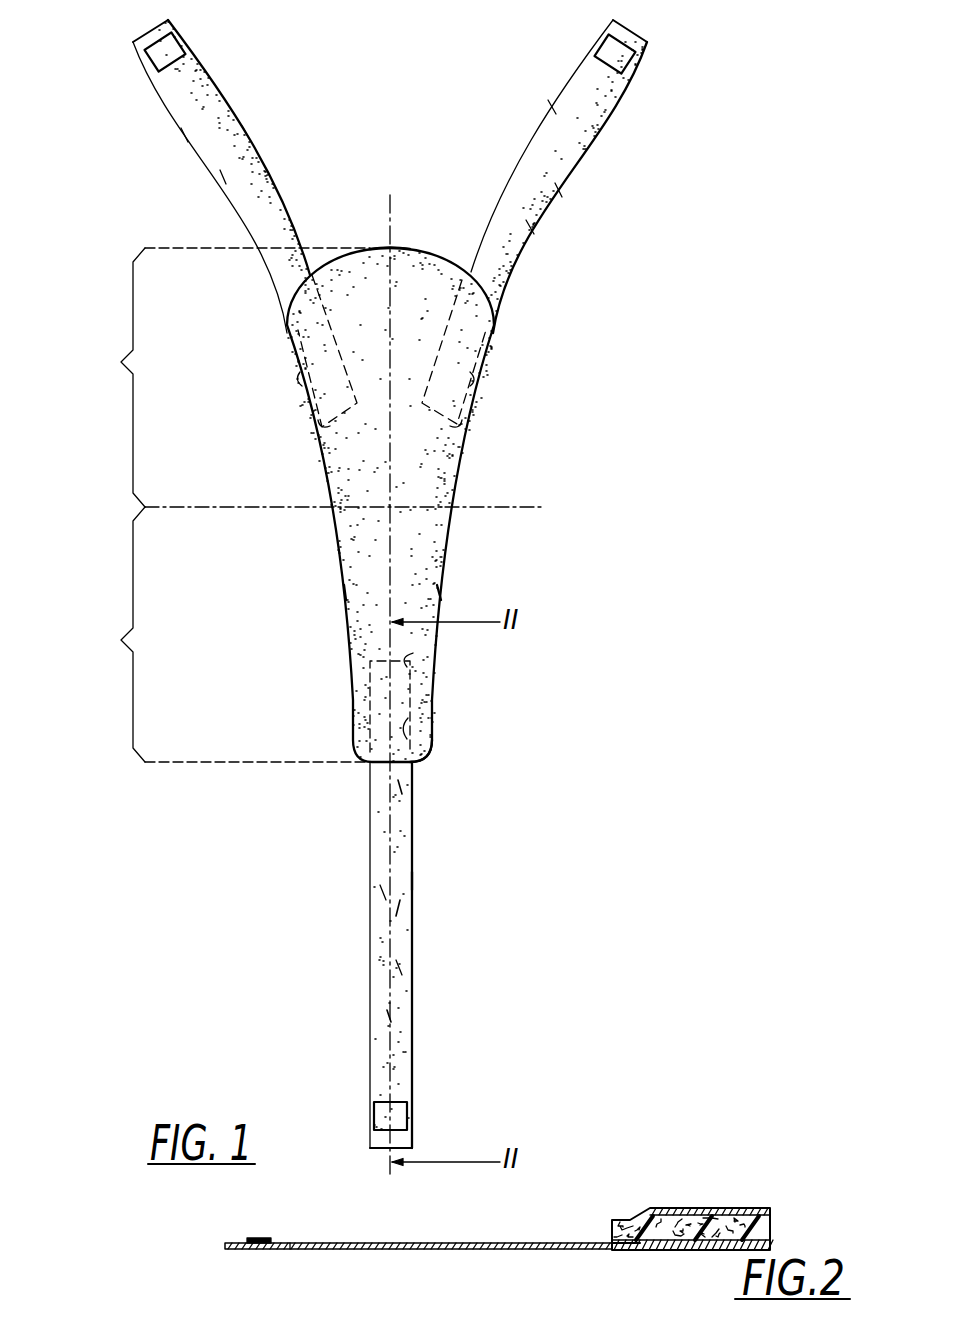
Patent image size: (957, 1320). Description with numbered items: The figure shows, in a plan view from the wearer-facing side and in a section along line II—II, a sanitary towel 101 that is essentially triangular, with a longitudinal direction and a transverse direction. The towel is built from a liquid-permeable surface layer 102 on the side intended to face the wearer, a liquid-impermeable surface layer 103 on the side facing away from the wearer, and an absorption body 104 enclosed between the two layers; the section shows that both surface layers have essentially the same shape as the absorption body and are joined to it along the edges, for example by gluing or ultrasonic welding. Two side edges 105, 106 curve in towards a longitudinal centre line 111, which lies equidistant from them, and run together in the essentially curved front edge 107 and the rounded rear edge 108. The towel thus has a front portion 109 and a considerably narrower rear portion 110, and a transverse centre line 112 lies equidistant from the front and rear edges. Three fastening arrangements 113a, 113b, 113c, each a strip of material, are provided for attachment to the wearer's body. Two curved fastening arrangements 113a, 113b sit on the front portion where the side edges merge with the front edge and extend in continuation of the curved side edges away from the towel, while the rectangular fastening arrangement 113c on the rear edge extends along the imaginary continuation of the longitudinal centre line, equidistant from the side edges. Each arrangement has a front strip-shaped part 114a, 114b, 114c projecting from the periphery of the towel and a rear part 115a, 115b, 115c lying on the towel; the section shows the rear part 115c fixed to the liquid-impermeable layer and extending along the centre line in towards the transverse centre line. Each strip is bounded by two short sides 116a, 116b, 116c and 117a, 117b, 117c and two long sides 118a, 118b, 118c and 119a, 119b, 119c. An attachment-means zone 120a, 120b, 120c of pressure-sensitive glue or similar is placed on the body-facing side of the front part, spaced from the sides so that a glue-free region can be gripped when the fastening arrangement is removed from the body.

In FIG. 1, the sanitary towel 101 is at (766, 34).
In FIG. 1, the liquid-permeable surface layer 102 is at (433, 472).
In FIG. 2, the liquid-permeable surface layer 102 is at (672, 1207).
In FIG. 1, the liquid-impermeable surface layer 103 is at (455, 478).
In FIG. 2, the liquid-impermeable surface layer 103 is at (732, 1247).
In FIG. 1, the absorption body 104 is at (445, 557).
In FIG. 2, the absorption body 104 is at (720, 1207).
In FIG. 1, the side edge 105 is at (444, 589).
In FIG. 1, the side edge 106 is at (340, 590).
In FIG. 1, the front edge 107 is at (401, 243).
In FIG. 1, the rear edge 108 is at (427, 773).
In FIG. 1, the front portion 109 is at (115, 367).
In FIG. 1, the rear portion 110 is at (115, 652).
In FIG. 1, the longitudinal centre line 111 is at (390, 229).
In FIG. 1, the transverse centre line 112 is at (520, 503).
In FIG. 1, the fastening arrangement 113a is at (597, 142).
In FIG. 1, the fastening arrangement 113b is at (238, 109).
In FIG. 1, the fastening arrangement 113c is at (413, 850).
In FIG. 2, the fastening arrangement 113c is at (384, 1251).
In FIG. 1, the front strip-shaped part 114a is at (530, 227).
In FIG. 1, the front strip-shaped part 114b is at (223, 177).
In FIG. 1, the front strip-shaped part 114c is at (398, 968).
In FIG. 2, the front strip-shaped part 114c is at (300, 1248).
In FIG. 1, the rear part 115a is at (482, 378).
In FIG. 1, the rear part 115b is at (305, 382).
In FIG. 1, the rear part 115c is at (430, 707).
In FIG. 2, the rear part 115c is at (634, 1247).
In FIG. 1, the short side 116a is at (636, 22).
In FIG. 1, the short side 116b is at (153, 32).
In FIG. 1, the short side 116c is at (384, 1150).
In FIG. 1, the short side 117a is at (455, 435).
In FIG. 1, the short side 117b is at (325, 432).
In FIG. 1, the short side 117c is at (435, 660).
In FIG. 1, the long side 118a is at (559, 190).
In FIG. 1, the long side 118b is at (184, 135).
In FIG. 1, the long side 118c is at (412, 882).
In FIG. 1, the long side 119a is at (552, 106).
In FIG. 1, the long side 119b is at (246, 133).
In FIG. 1, the long side 119c is at (383, 893).
In FIG. 1, the attachment-means zone 120a is at (632, 68).
In FIG. 1, the attachment-means zone 120b is at (151, 66).
In FIG. 1, the attachment-means zone 120c is at (385, 1102).
In FIG. 2, the attachment-means zone 120c is at (252, 1233).